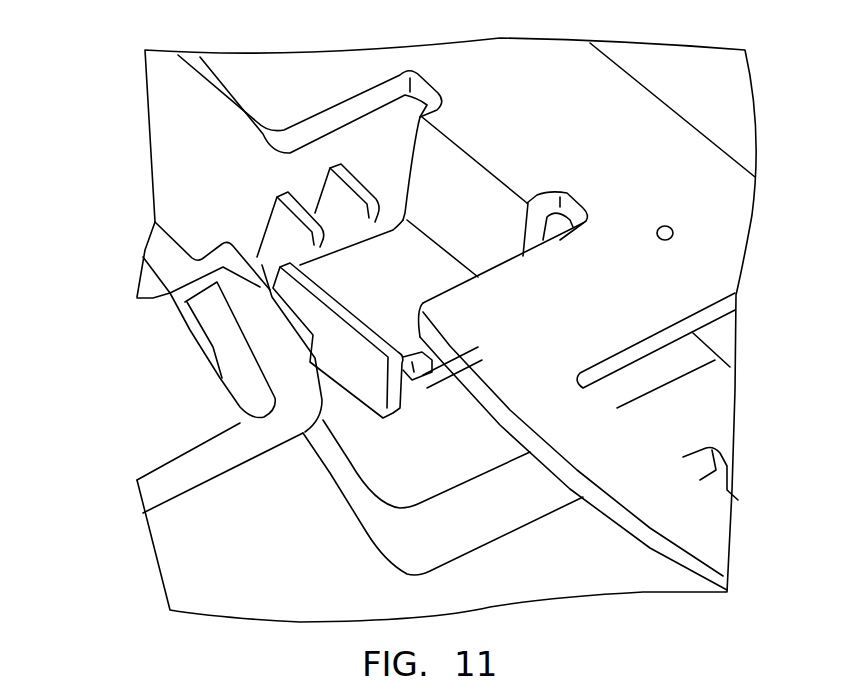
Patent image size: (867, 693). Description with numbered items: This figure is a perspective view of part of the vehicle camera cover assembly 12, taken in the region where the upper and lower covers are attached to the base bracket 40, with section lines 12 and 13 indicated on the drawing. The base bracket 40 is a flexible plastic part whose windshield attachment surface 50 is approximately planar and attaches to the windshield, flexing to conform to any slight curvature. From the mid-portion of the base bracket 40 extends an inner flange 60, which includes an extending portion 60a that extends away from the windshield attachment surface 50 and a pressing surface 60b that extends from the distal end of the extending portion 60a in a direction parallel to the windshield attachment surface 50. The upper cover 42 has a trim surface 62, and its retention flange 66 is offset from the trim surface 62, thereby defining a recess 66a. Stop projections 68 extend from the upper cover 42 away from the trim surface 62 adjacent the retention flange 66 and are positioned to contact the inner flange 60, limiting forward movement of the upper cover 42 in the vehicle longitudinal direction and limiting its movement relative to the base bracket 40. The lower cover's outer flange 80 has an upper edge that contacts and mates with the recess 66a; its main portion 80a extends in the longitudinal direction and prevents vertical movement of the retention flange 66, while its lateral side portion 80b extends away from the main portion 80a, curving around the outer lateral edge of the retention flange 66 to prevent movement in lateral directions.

The vehicle camera cover assembly 12 is at (617, 147).
The section line 13- 13 is at (273, 97).
The base bracket 40 is at (717, 227).
The upper cover 42 is at (152, 126).
The windshield attachment surface 50 is at (710, 170).
The inner flange 60 is at (410, 150).
The extending portion 60a is at (483, 193).
The pressing surface 60b is at (443, 367).
The trim surface 62 is at (153, 298).
The retention flange 66 is at (410, 395).
The recess 66a is at (192, 333).
The stop projection 68 is at (340, 207).
The outer flange 80 is at (373, 440).
The main portion 80a is at (347, 417).
The lateral side portion 80b is at (277, 380).